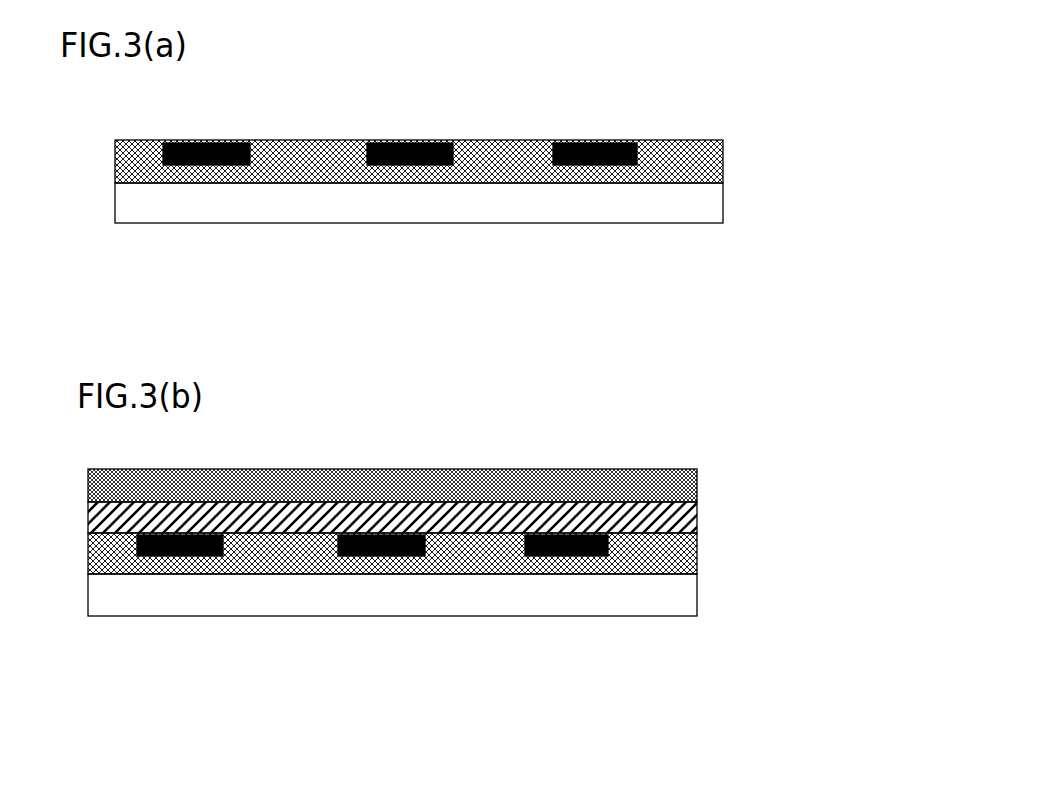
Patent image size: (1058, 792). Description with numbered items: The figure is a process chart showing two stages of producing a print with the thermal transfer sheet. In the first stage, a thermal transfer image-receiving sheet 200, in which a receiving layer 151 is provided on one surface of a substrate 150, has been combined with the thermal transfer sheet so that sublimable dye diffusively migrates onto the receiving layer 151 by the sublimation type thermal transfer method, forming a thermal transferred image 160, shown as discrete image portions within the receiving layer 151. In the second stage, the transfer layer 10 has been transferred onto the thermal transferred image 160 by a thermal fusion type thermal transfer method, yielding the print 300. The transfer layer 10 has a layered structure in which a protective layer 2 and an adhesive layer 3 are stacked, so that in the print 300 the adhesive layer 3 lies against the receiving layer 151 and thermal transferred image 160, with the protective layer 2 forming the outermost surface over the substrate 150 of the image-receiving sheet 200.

In FIG. 3B, the protective layer 2 is at (637, 483).
In FIG. 3B, the adhesive layer 3 is at (638, 512).
In FIG. 3B, the transfer layer 10 is at (524, 498).
In FIG. 3A, the substrate 150 is at (667, 203).
In FIG. 3B, the substrate 150 is at (638, 593).
In FIG. 3A, the receiving layer 151 is at (665, 162).
In FIG. 3B, the receiving layer 151 is at (633, 553).
In FIG. 3A, the thermal transferred image 160 is at (580, 140).
In FIG. 3B, the thermal transferred image 160 is at (530, 557).
In FIG. 3A, the thermal transfer image-receiving sheet 200 is at (466, 130).
In FIG. 3B, the print 300 is at (524, 527).